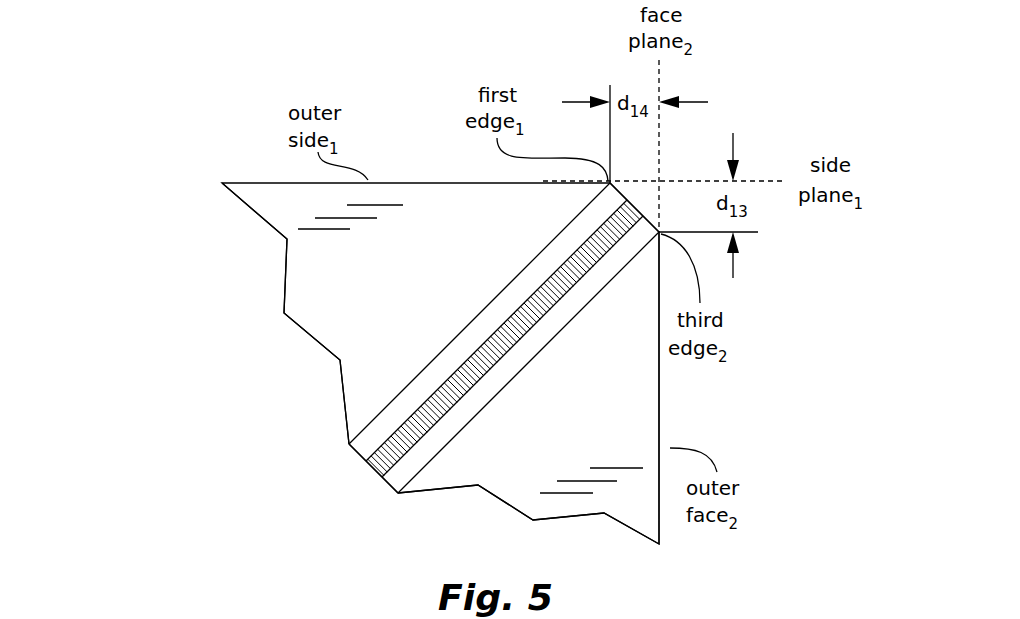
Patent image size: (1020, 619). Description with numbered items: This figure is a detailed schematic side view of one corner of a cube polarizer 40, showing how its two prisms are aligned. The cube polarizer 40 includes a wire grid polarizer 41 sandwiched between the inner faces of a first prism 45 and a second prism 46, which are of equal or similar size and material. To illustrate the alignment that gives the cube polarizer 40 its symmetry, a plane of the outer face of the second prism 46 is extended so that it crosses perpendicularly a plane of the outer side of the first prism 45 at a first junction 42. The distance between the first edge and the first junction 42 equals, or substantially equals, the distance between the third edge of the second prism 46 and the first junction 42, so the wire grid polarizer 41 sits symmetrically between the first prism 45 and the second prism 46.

The cube polarizer 40 is at (101, 287).
The wire grid polarizer 41 is at (340, 498).
The first junction 42 is at (662, 177).
The first prism 45 is at (412, 291).
The second prism 46 is at (587, 408).